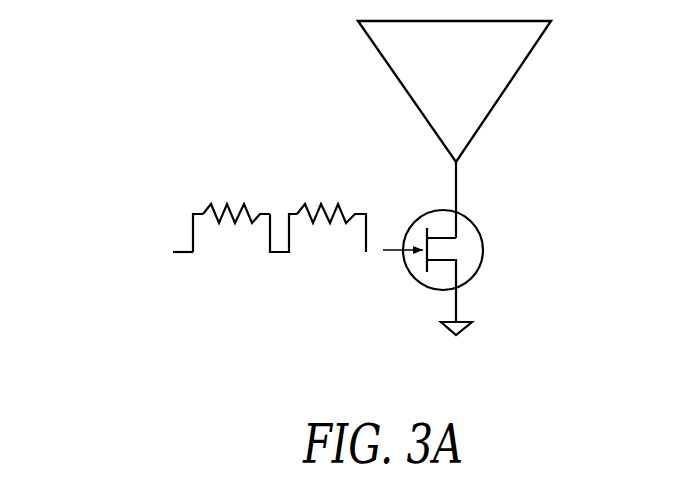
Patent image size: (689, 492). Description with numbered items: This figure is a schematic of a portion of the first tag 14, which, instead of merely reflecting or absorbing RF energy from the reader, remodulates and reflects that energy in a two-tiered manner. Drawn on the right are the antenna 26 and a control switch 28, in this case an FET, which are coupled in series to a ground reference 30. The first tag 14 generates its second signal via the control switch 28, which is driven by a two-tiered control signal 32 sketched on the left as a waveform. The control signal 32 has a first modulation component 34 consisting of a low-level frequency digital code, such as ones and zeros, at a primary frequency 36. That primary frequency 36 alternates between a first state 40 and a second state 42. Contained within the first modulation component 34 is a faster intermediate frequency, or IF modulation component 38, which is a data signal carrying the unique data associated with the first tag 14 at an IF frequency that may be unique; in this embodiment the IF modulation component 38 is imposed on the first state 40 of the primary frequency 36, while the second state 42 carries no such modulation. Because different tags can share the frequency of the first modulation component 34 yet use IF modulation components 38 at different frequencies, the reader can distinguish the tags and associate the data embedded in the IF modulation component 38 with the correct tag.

The first tag 14 is at (212, 93).
The antenna 26 is at (505, 92).
The control switch 28 is at (478, 212).
The ground reference 30 is at (468, 332).
The control signal 32 is at (147, 157).
The first modulation component 34 is at (182, 255).
The primary frequency 36 is at (193, 233).
The IF modulation component 38 is at (232, 197).
The first state 40 is at (272, 217).
The second state 42 is at (273, 255).